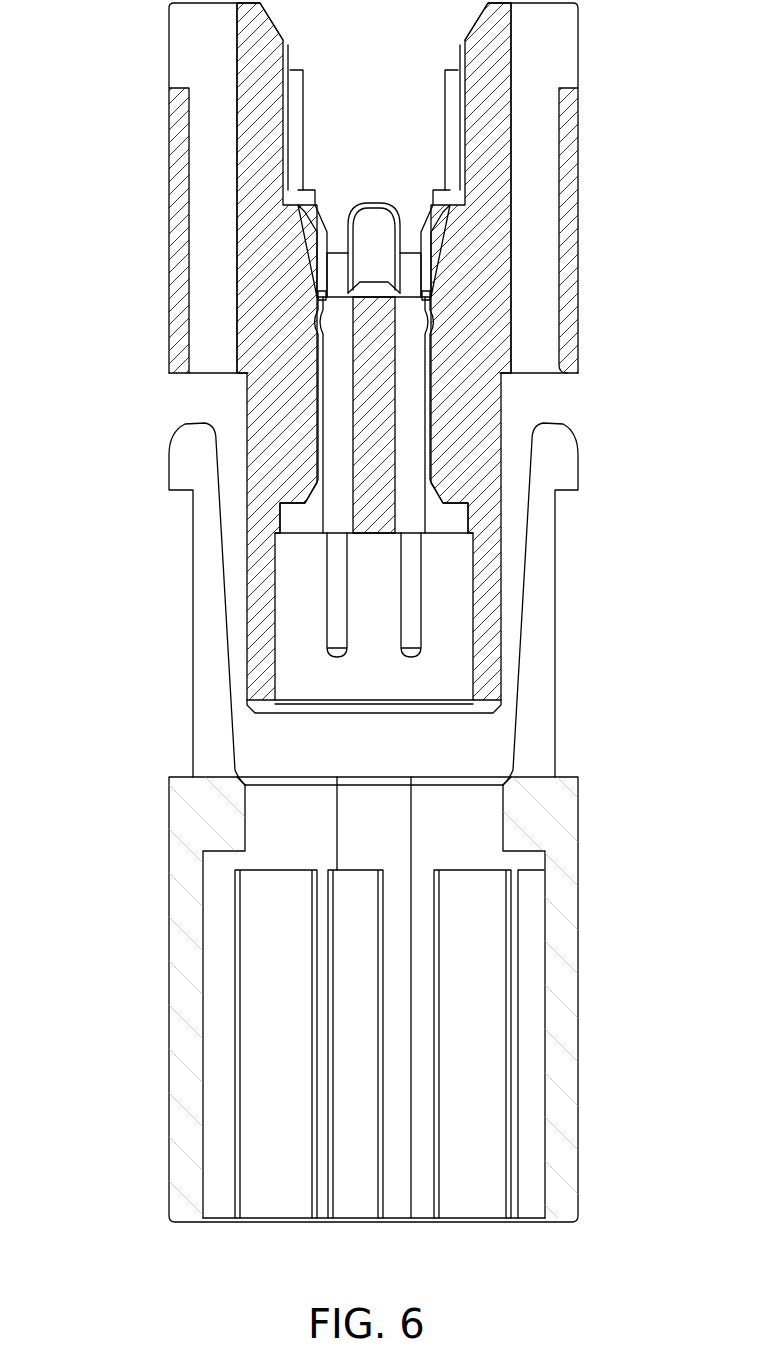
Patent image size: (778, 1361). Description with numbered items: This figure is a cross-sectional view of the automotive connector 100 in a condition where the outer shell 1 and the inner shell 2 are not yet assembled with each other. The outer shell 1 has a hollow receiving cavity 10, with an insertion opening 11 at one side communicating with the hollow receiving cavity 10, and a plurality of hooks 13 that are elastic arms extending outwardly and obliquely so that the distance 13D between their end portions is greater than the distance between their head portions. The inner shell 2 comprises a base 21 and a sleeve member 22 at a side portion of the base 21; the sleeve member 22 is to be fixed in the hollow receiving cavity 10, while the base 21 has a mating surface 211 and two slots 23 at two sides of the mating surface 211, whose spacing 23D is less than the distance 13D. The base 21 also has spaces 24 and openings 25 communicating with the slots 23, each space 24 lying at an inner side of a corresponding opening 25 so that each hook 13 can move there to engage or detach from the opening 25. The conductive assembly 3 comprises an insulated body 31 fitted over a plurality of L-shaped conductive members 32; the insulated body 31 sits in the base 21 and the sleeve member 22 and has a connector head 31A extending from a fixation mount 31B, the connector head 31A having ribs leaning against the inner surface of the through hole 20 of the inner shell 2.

The automotive connector 100 is at (90, 656).
The outer shell 1 is at (376, 1024).
The hollow receiving cavity 10 is at (350, 1020).
The insertion opening 11 is at (275, 1212).
The hooks 13 is at (187, 470).
The distance between end portions of the hooks 13D is at (216, 390).
The inner shell 2 is at (372, 351).
The through hole 20 is at (374, 580).
The base 21 is at (577, 205).
The mating surface 211 is at (168, 383).
The sleeve member 22 is at (505, 595).
The slots 23 is at (533, 280).
The spacing of the slots 23D is at (237, 133).
The spaces 24 is at (527, 57).
The openings 25 is at (573, 88).
The conductive assembly 3 is at (366, 631).
The insulated body 31 is at (463, 373).
The connector head 31A is at (375, 522).
The fixation mount 31B is at (307, 218).
The conductive members 32 is at (337, 620).